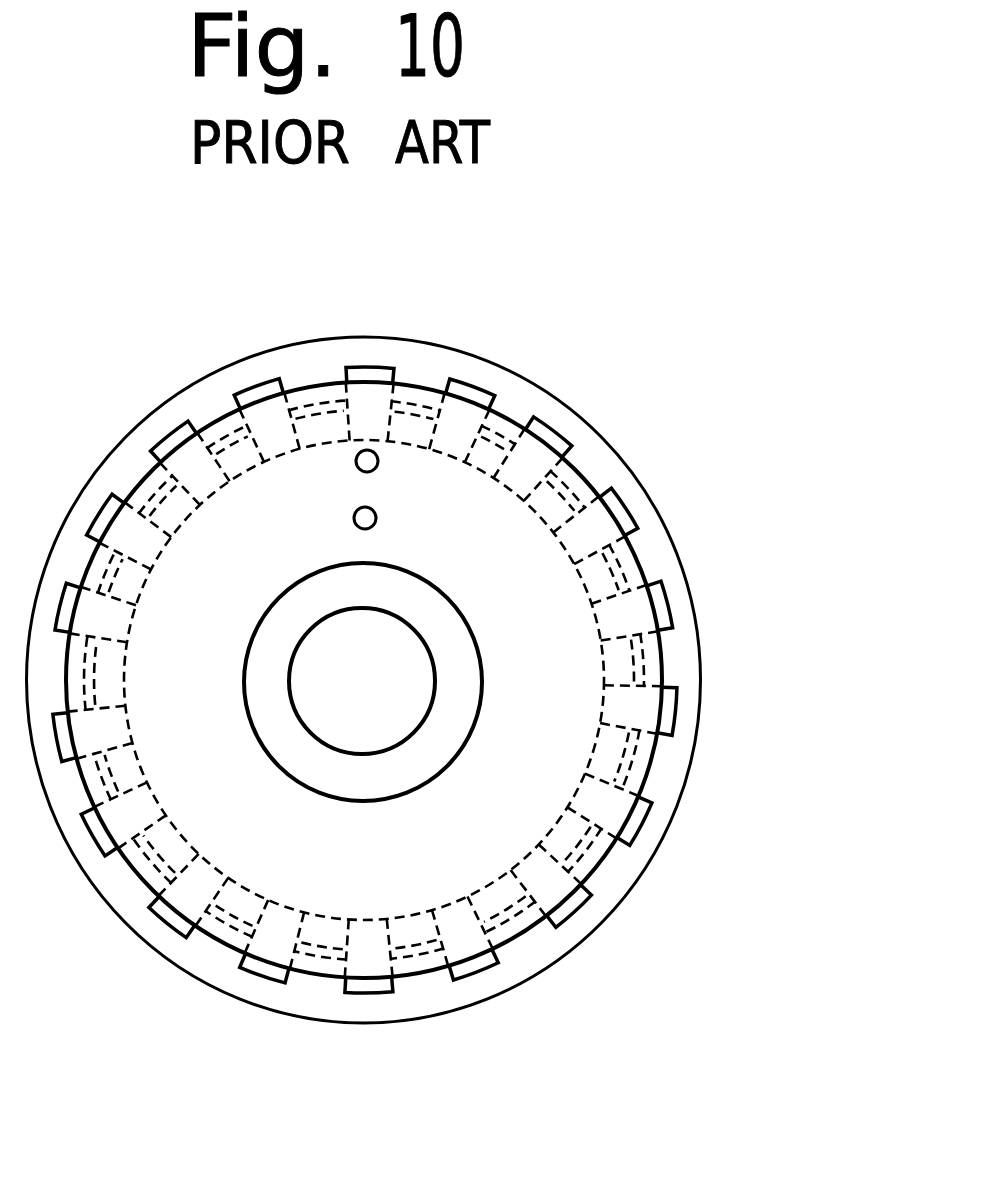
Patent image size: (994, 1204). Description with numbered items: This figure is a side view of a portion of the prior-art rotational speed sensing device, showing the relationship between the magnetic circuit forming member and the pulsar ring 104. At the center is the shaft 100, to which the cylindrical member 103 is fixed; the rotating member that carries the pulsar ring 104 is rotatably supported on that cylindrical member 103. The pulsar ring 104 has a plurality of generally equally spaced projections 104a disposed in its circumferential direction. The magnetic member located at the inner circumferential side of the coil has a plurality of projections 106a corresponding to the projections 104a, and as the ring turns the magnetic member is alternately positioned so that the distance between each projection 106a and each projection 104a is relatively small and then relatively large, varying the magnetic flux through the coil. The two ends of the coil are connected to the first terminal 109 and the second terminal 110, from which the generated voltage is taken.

The shaft 100 is at (345, 740).
The cylindrical member 103 is at (407, 775).
The pulsar ring 104 is at (455, 680).
The projections 104a is at (648, 604).
The projections 106a is at (610, 597).
The first terminal 109 is at (370, 458).
The second terminal 110 is at (376, 515).